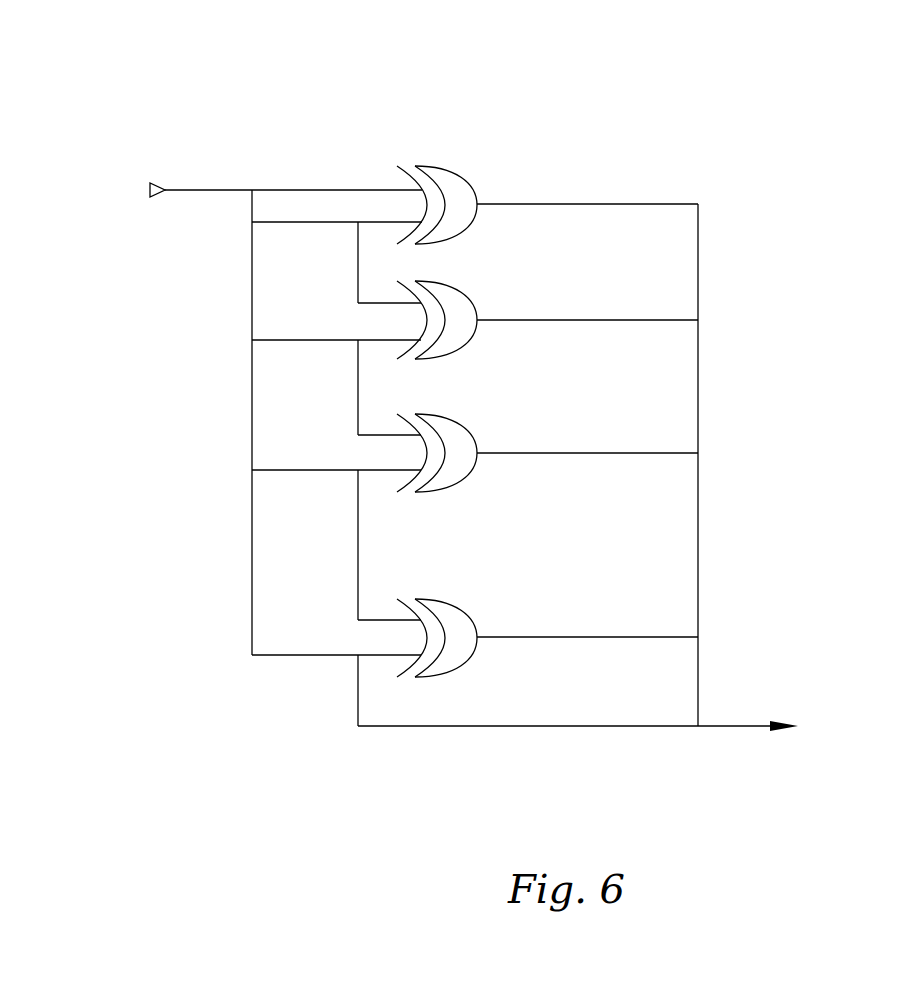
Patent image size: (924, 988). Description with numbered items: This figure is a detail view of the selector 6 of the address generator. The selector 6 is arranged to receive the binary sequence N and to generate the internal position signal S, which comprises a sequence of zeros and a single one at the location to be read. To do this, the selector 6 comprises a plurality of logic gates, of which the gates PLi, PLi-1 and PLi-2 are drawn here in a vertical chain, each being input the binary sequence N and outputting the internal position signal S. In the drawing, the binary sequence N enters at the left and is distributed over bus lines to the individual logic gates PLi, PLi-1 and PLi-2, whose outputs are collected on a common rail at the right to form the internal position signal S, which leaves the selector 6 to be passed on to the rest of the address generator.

The selector 6 is at (840, 161).
The binary sequence N is at (201, 178).
The internal position signal S is at (748, 714).
The logic gate PLi is at (453, 205).
The logic gate PLi-1 is at (465, 320).
The logic gate PLi-2 is at (465, 453).